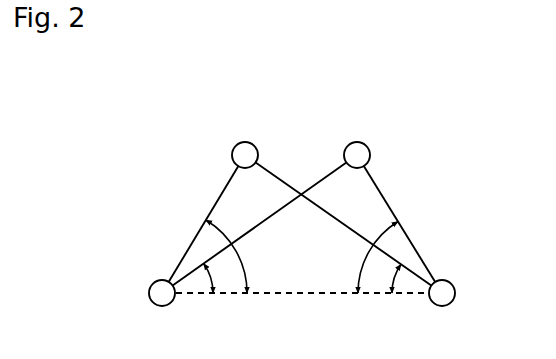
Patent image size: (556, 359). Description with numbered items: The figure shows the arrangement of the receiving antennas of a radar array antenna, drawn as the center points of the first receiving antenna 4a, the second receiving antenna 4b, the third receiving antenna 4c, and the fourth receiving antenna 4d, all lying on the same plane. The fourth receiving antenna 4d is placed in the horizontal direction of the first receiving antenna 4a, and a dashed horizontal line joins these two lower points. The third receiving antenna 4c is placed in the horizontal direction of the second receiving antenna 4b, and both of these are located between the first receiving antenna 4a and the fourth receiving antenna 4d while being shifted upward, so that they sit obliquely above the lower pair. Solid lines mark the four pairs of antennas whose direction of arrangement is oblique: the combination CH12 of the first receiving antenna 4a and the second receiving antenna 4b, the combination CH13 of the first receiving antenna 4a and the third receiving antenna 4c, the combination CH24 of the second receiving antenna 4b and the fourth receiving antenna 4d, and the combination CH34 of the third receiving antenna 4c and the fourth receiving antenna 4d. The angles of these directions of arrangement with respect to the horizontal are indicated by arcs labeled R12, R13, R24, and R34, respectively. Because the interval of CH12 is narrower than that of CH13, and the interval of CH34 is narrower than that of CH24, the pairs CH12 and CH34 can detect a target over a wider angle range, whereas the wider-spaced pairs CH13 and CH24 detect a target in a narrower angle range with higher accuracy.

The first receiving antenna 4a is at (171, 303).
The second receiving antenna 4b is at (232, 151).
The third receiving antenna 4c is at (370, 150).
The fourth receiving antenna 4d is at (455, 290).
The combination of the first receiving antenna and the second receiving antenna CH12 is at (216, 203).
The combination of the first receiving antenna and the third receiving antenna CH13 is at (330, 173).
The combination of the second receiving antenna and the fourth receiving antenna CH24 is at (282, 172).
The combination of the third receiving antenna and the fourth receiving antenna CH34 is at (386, 200).
The angle of the direction of arrangement of CH12 R12 is at (224, 229).
The angle of the direction of arrangement of CH13 R13 is at (216, 279).
The angle of the direction of arrangement of CH24 R24 is at (397, 273).
The angle of the direction of arrangement of CH34 R34 is at (366, 257).